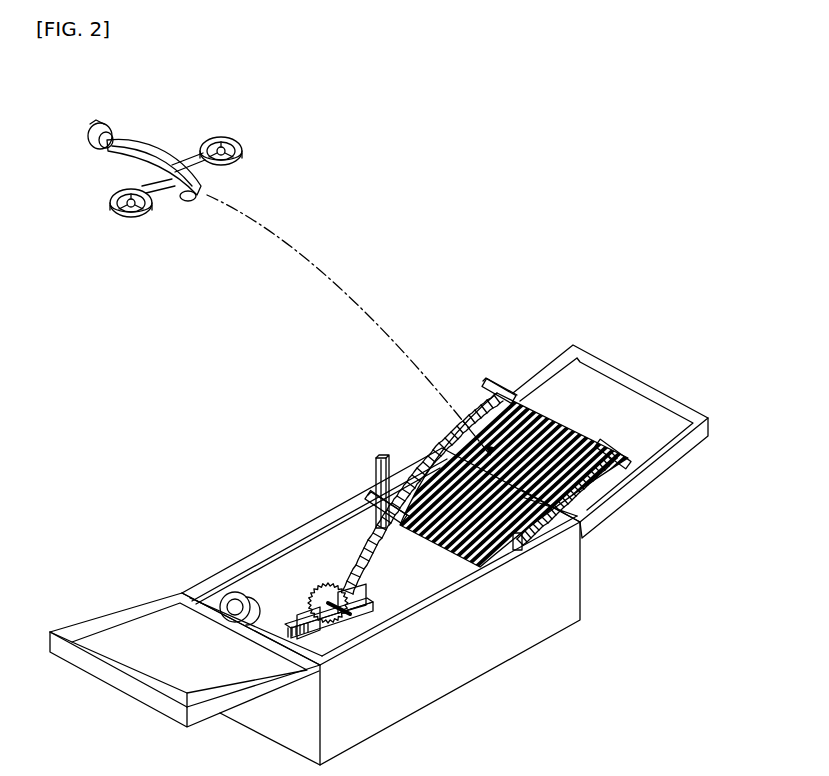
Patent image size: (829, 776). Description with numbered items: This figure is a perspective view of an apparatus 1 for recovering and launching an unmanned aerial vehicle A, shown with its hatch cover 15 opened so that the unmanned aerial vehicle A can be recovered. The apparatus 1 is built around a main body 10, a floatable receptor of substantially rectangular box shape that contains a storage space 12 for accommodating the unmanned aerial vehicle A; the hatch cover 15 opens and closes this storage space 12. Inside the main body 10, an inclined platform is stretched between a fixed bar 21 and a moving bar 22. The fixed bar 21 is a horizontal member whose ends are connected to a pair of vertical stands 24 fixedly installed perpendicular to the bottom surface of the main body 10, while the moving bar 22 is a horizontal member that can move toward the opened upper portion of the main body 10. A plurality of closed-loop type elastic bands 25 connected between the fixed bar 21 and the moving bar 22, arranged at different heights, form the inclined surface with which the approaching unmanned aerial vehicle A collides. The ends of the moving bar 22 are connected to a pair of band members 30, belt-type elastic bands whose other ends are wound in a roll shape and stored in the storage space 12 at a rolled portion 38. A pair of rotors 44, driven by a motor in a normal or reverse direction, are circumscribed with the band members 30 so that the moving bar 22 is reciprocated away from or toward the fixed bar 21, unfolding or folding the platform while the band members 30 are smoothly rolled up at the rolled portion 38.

The unmanned aerial vehicle A is at (157, 150).
The apparatus for recovering and launching an unmanned aerial vehicle 1 is at (491, 294).
The main body 10 is at (582, 578).
The storage space 12 is at (291, 574).
The hatch cover 15 is at (605, 358).
The fixed bar 21 is at (370, 492).
The moving bar 22 is at (491, 380).
The vertical stand 24 is at (379, 456).
The closed-loop type elastic band 25 is at (538, 393).
The band member 30 is at (407, 485).
The rolled portion 38 is at (231, 600).
The rotor 44 is at (334, 582).